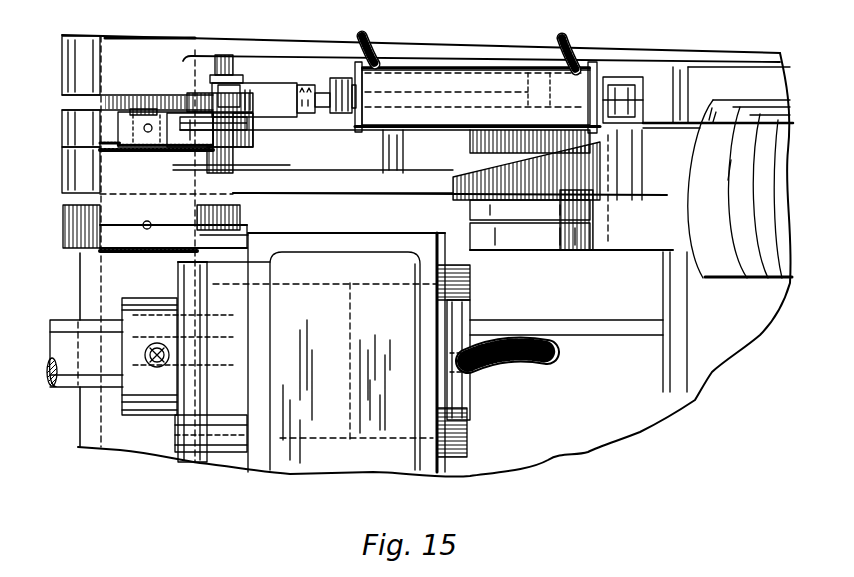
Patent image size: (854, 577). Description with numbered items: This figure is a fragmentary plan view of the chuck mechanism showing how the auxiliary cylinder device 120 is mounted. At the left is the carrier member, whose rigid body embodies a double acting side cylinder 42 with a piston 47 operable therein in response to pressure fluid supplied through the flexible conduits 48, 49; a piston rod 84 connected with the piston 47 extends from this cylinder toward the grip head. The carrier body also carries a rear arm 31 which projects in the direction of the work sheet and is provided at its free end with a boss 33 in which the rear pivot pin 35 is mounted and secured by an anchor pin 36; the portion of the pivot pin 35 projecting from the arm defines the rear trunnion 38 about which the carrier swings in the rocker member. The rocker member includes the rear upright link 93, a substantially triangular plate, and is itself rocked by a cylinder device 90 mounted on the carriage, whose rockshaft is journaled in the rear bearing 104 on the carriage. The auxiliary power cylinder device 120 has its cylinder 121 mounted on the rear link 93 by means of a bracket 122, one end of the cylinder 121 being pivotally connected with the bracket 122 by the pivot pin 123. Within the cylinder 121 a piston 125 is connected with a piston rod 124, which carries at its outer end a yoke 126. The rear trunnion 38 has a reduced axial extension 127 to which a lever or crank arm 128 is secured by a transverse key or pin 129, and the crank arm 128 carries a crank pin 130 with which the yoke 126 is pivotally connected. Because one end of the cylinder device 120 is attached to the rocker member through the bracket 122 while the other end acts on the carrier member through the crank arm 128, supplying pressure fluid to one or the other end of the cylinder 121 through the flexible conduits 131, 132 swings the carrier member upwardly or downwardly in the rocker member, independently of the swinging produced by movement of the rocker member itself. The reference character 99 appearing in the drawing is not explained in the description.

The rear bearing 104 is at (66, 48).
The rear trunnion 38 is at (110, 142).
The lower frame block 99 is at (88, 172).
The reduced axial extension 127 is at (152, 112).
The transverse key or pin 129 is at (151, 126).
The crank pin 130 is at (236, 78).
The yoke 126 is at (278, 105).
The crank arm 128 is at (248, 147).
The rear link 93 is at (332, 178).
The flexible conduit 132 is at (383, 40).
The piston rod 124 is at (410, 85).
The auxiliary power cylinder device 120 is at (457, 67).
The cylinder 121 is at (493, 67).
The piston 125 is at (537, 85).
The flexible conduit 131 is at (568, 41).
The pivot pin 123 is at (620, 77).
The bracket 122 is at (593, 185).
The cylinder device 90 is at (753, 278).
The anchor pin 36 is at (143, 225).
The rear boss 33 is at (247, 222).
The rear pivot pin 35 is at (147, 257).
The rear arm 31 is at (224, 243).
The piston rod 84 is at (67, 325).
The flexible conduit 49 is at (170, 350).
The piston 47 is at (333, 355).
The side cylinder 42 is at (462, 305).
The flexible conduit 48 is at (508, 368).